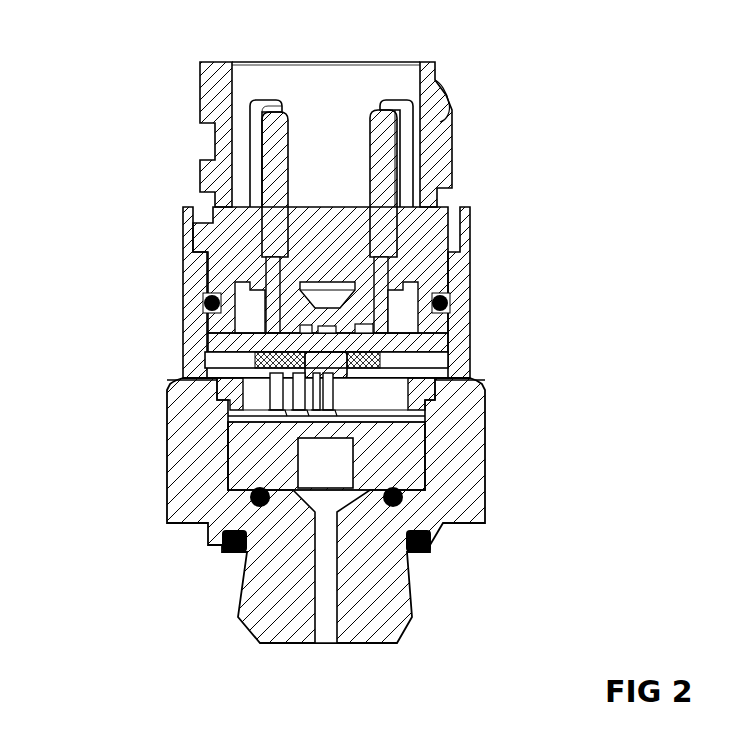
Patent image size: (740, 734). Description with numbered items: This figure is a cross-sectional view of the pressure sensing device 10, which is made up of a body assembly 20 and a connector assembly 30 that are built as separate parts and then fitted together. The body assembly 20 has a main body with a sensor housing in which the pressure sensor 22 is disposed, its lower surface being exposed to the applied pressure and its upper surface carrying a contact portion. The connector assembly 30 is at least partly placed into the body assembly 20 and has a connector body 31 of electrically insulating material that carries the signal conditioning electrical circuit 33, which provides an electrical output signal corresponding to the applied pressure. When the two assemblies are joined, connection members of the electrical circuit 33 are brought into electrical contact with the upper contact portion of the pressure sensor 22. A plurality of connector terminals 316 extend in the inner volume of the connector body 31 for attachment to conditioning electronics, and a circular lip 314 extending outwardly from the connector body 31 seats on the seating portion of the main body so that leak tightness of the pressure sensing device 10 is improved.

The pressure sensing device 10 is at (360, 350).
The body assembly 20 is at (330, 217).
The connector assembly 30 is at (340, 497).
The pressure sensor 22 is at (282, 447).
The connector body 31 is at (197, 472).
The signal conditioning electrical circuit 33 is at (250, 341).
The circular lip 314 is at (213, 233).
The connector terminals 316 is at (282, 126).